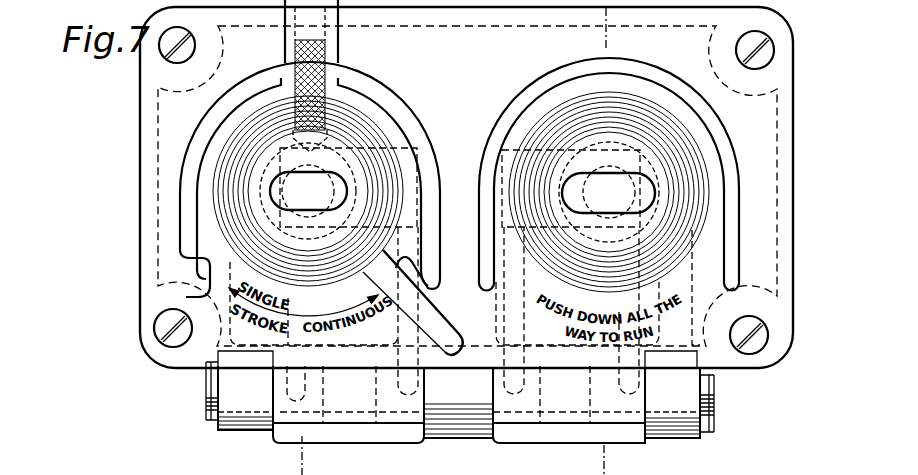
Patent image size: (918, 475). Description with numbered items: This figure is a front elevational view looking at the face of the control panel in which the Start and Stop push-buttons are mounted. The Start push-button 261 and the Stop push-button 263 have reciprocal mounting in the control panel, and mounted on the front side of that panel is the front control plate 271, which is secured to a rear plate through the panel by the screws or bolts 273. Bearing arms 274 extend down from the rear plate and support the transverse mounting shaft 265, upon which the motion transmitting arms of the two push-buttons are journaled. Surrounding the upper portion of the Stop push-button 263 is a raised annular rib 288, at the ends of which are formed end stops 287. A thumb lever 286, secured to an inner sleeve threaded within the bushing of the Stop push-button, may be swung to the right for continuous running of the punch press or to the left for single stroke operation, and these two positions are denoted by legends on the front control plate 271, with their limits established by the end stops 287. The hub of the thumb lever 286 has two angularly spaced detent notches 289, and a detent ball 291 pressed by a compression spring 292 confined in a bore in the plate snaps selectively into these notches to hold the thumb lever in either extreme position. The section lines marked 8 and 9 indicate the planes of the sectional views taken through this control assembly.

The Start push-button 261 is at (692, 207).
The Stop push-button 263 is at (230, 217).
The transverse mounting shaft 265 is at (207, 387).
The front control plate 271 is at (147, 147).
The screws or bolts 273 is at (195, 47).
The bearing arms 274 is at (215, 427).
The thumb lever 286 is at (448, 343).
The end stops 287 is at (183, 292).
The raised annular rib 288 is at (393, 87).
The detent notches 289 is at (294, 140).
The detent ball 291 is at (336, 138).
The locking plunger 292 is at (318, 78).
The section line 8- 8 is at (315, 18).
The section line 9- 9 is at (592, 22).